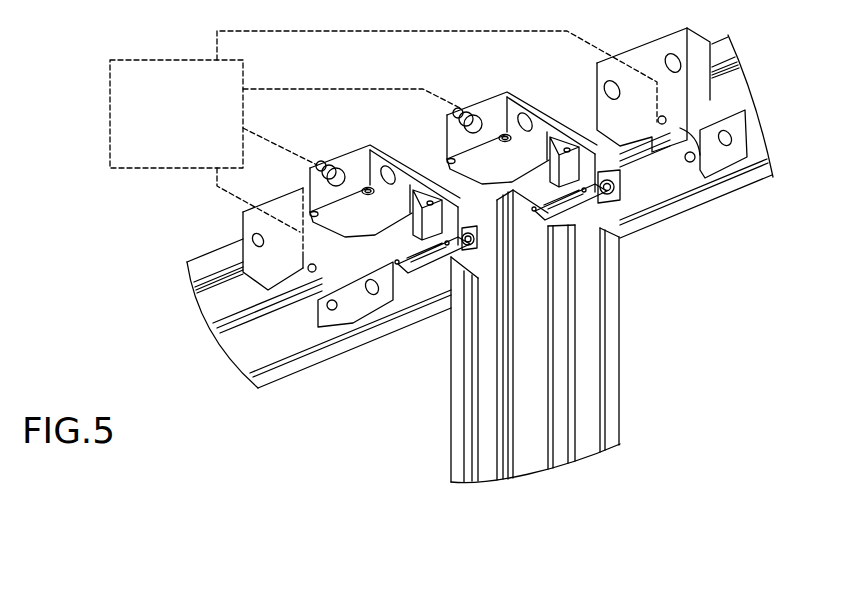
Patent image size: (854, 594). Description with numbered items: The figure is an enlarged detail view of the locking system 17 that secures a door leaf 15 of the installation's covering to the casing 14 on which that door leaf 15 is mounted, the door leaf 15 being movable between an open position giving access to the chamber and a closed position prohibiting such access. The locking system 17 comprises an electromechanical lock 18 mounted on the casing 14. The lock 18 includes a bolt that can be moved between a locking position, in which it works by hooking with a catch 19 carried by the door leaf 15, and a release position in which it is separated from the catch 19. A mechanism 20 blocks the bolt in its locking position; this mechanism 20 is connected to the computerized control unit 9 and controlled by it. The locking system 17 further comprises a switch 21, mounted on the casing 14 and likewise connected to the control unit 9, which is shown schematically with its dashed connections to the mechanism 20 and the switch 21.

The computerized control unit 9 is at (181, 130).
The casing 14 is at (738, 80).
The door leaf 15 is at (615, 335).
The locking system 17 is at (366, 137).
The electromechanical lock 18 is at (377, 163).
The catch 19 is at (430, 266).
The mechanism for blocking the bolt 20 is at (313, 172).
The switch 21 is at (342, 298).